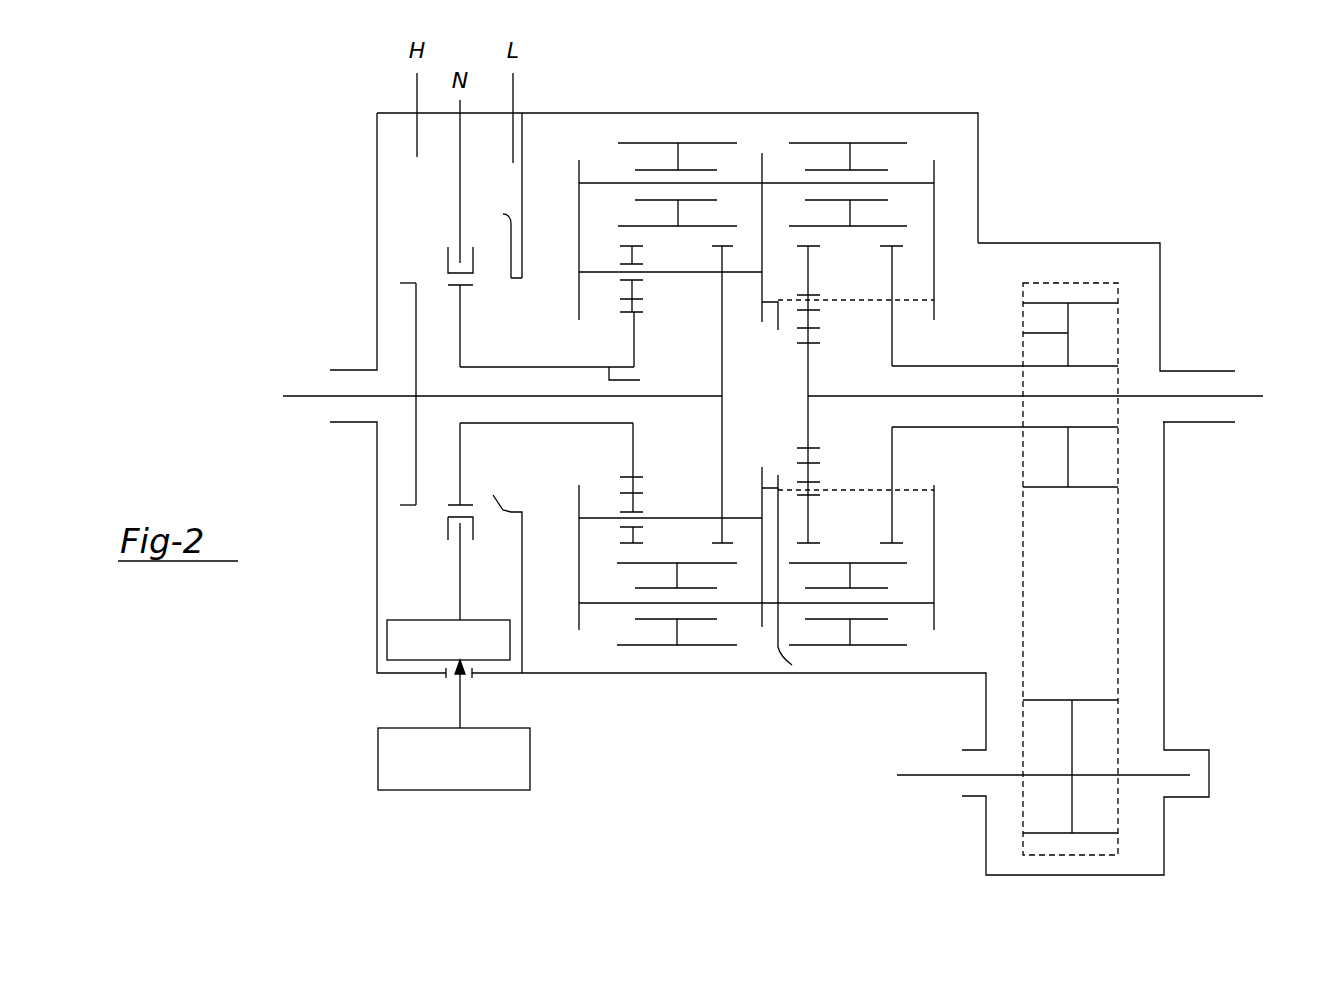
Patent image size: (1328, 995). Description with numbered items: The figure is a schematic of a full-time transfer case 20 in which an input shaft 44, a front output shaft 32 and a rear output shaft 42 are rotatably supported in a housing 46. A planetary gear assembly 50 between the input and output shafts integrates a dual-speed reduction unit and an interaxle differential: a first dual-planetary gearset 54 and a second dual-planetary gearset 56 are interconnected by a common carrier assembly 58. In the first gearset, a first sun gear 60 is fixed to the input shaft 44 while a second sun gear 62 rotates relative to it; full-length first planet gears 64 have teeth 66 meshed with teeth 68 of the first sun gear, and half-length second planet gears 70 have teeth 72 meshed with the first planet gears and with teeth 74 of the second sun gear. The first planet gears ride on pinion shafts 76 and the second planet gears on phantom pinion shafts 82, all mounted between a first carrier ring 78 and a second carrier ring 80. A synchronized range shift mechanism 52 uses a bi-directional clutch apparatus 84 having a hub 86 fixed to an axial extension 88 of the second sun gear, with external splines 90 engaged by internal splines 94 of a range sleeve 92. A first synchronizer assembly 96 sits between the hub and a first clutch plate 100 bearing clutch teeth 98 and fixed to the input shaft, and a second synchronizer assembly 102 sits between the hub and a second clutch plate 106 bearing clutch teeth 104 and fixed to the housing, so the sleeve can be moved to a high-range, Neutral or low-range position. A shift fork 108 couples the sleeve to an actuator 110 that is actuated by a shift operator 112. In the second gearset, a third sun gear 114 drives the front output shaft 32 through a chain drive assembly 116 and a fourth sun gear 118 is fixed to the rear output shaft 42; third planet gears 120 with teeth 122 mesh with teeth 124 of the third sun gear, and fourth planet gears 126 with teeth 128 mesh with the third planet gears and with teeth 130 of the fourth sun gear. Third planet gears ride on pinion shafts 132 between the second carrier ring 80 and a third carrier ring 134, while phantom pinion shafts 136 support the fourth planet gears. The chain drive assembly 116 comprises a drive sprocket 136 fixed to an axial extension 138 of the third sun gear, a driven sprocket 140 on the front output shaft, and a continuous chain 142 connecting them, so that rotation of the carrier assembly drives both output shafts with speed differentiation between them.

The transfer case 20 is at (1100, 145).
The front output shaft 32 is at (925, 775).
The rear output shaft 42 is at (1252, 396).
The input shaft 44 is at (313, 396).
The housing 46 is at (1108, 238).
The planetary gear assembly 50 is at (774, 143).
The synchronized range shift mechanism 52 is at (404, 225).
The first dual-planetary gearset 54 is at (562, 153).
The second dual-planetary gearset 56 is at (945, 135).
The carrier assembly 58 is at (948, 203).
The first sun gear 60 is at (722, 345).
The second sun gear 62 is at (634, 330).
The first planet gears 64 is at (680, 152).
The teeth of first planet gears 66 is at (643, 230).
The teeth of first sun gear 68 is at (723, 246).
The second planet gears 70 is at (643, 256).
The teeth of second planet gears 72 is at (645, 299).
The teeth of second sun gear 74 is at (620, 312).
The pinion shaft 76 is at (625, 183).
The first carrier ring 78 is at (579, 253).
The second carrier ring 80 is at (762, 627).
The pinion shaft 82 is at (607, 272).
The bi-directional clutch apparatus 84 is at (474, 310).
The hub 86 is at (463, 485).
The axial extension 88 is at (640, 380).
The external splines 90 is at (447, 517).
The range sleeve 92 is at (442, 255).
The internal longitudinal splines 94 is at (473, 514).
The first synchronizer assembly 96 is at (426, 492).
The clutch teeth 98 is at (425, 295).
The first clutch plate 100 is at (413, 340).
The second synchronizer assembly 102 is at (497, 300).
The clutch teeth 104 is at (481, 241).
The second clutch plate 106 is at (513, 170).
The shift fork 108 is at (457, 578).
The actuator 110 is at (387, 640).
The shift operator 112 is at (530, 748).
The third sun gear 114 is at (893, 465).
The chain drive assembly 116 is at (1122, 323).
The fourth sun gear 118 is at (808, 370).
The third planet gears 120 is at (850, 158).
The teeth of third planet gears 122 is at (836, 227).
The teeth of third sun gear 124 is at (903, 242).
The fourth planet gears 126 is at (812, 472).
The teeth of fourth planet gears 128 is at (812, 459).
The teeth of fourth sun gear 130 is at (810, 345).
The pinion shaft 132 is at (792, 665).
The third carrier ring 134 is at (925, 548).
The pinion shaft / drive sprocket 136 is at (1032, 330).
The axial extension 138 is at (1000, 366).
The driven sprocket 140 is at (1072, 740).
The continuous chain 142 is at (1118, 550).